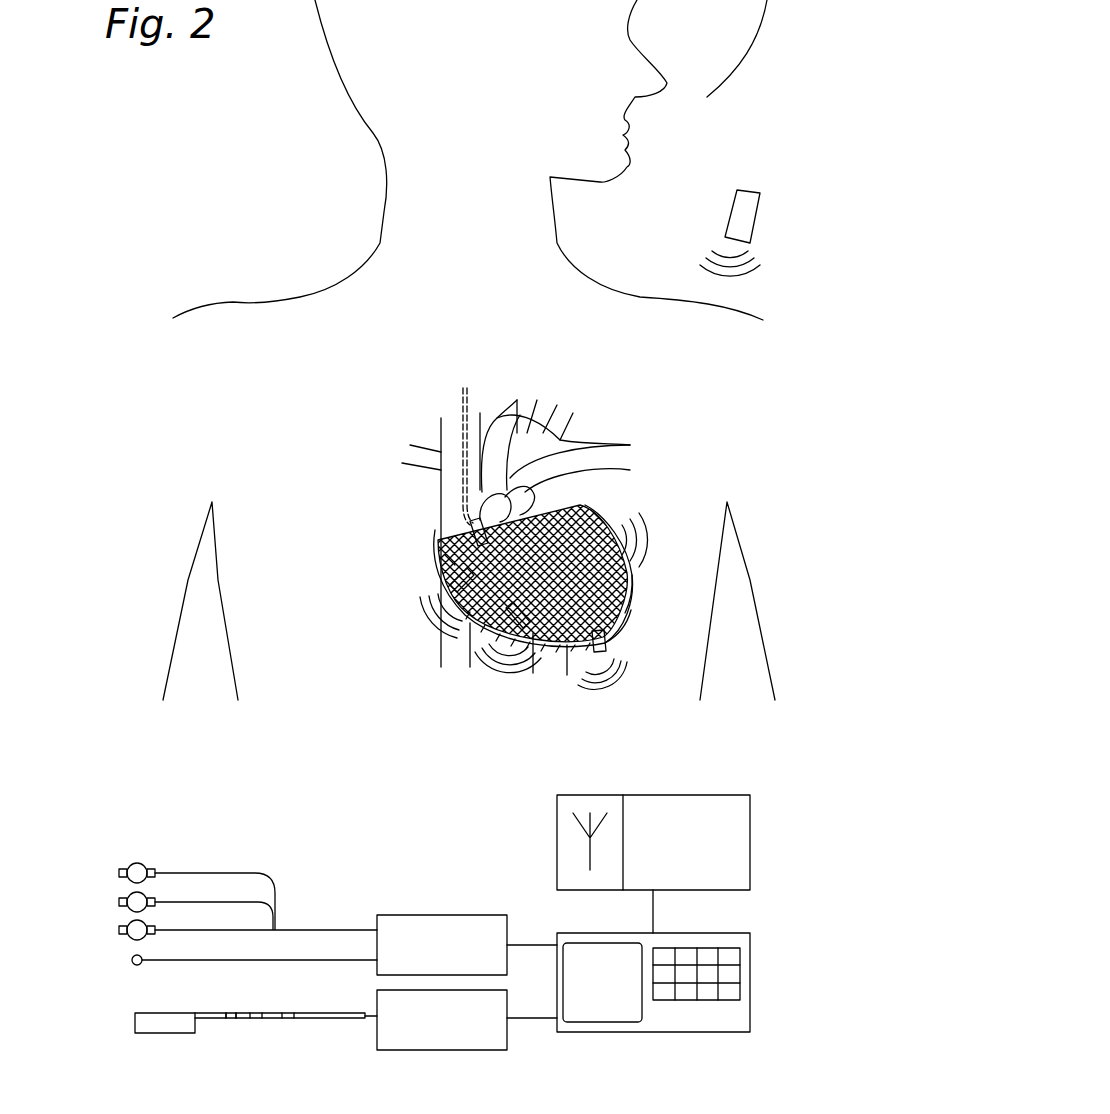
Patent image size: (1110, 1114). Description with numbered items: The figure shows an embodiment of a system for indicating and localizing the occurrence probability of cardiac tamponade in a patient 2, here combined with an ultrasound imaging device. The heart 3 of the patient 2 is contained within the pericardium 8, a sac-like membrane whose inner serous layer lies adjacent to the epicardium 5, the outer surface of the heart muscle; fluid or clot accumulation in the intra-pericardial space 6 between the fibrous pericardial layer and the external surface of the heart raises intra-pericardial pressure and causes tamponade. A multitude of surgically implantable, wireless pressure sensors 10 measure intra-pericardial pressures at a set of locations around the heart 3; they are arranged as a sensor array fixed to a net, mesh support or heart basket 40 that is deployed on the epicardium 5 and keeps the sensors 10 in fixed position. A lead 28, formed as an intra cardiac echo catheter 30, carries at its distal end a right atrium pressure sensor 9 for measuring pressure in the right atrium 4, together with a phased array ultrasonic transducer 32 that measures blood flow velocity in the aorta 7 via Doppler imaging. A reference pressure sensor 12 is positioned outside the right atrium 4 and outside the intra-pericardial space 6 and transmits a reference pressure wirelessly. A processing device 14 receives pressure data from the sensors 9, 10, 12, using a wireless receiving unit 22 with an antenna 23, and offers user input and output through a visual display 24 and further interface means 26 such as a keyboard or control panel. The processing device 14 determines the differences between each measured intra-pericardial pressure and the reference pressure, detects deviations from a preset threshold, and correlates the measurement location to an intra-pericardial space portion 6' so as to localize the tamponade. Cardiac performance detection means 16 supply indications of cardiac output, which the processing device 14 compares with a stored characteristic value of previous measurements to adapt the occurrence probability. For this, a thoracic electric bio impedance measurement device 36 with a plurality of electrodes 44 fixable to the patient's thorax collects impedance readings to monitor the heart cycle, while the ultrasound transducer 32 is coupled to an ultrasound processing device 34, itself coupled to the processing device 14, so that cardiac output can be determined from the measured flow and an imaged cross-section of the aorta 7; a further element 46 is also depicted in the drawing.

The patient 2 is at (366, 197).
The heart 3 is at (585, 427).
The right atrium 4 is at (455, 572).
The epicardium 5 is at (622, 600).
The intra-pericardial space 6 is at (649, 626).
The intra-pericardial space portion 6' is at (487, 651).
The aorta 7 is at (502, 418).
The pericardium 8 is at (612, 648).
The right atrium pressure sensor 9 is at (455, 563).
The intra pericardial pressure sensors 10 is at (636, 522).
The reference pressure sensor 12 is at (738, 190).
The processing device 14 is at (685, 1018).
The cardiac performance detection means 16 is at (178, 988).
The wireless receiving unit 22 is at (700, 820).
The antenna 23 is at (597, 810).
The visual display 24 is at (587, 1010).
The interface means 26 is at (712, 975).
The lead 28 is at (465, 400).
The intra cardiac echo catheter 30 is at (222, 1023).
The phased array ultrasonic imaging device 32 is at (470, 525).
The ultrasound processing device 34 is at (455, 1025).
The thoracic electric bio impedance measurement device 36 is at (450, 932).
The net 40 is at (563, 542).
The electrodes 44 is at (125, 935).
The reference electrode 46 is at (132, 960).